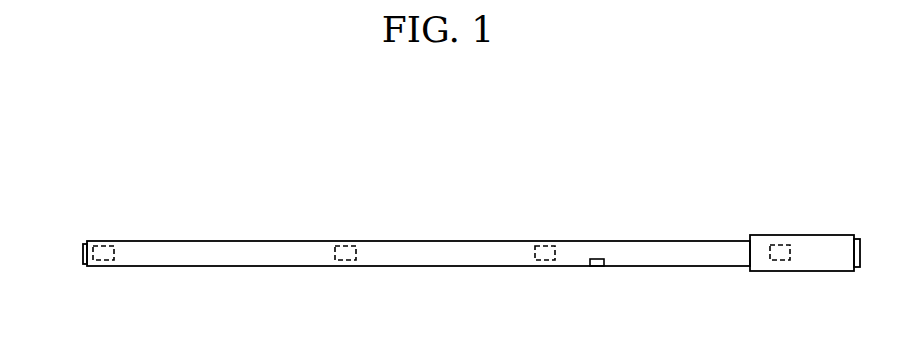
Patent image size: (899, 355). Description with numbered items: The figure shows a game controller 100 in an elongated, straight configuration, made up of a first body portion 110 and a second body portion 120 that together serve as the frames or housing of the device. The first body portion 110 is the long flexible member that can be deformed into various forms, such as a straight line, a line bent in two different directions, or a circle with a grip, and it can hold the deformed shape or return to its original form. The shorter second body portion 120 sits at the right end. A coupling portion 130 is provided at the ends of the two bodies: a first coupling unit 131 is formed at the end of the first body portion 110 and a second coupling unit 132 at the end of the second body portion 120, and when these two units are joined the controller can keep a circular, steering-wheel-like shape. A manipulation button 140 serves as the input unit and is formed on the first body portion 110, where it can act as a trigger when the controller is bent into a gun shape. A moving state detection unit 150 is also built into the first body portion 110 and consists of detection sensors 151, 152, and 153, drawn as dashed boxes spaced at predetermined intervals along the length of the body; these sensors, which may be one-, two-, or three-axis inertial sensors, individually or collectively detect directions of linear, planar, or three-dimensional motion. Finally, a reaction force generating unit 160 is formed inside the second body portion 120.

The game controller 100 is at (758, 163).
The first body portion 110 is at (447, 260).
The second body portion 120 is at (790, 272).
The coupling portion 130 is at (55, 188).
The first coupling unit 131 is at (86, 242).
The second coupling unit 132 is at (858, 272).
The manipulation button 140 is at (596, 268).
The moving state detection unit 150 is at (112, 188).
The detection sensor 151 is at (113, 247).
The detection sensor 152 is at (347, 248).
The detection sensor 153 is at (546, 248).
The reaction force generating unit 160 is at (781, 245).